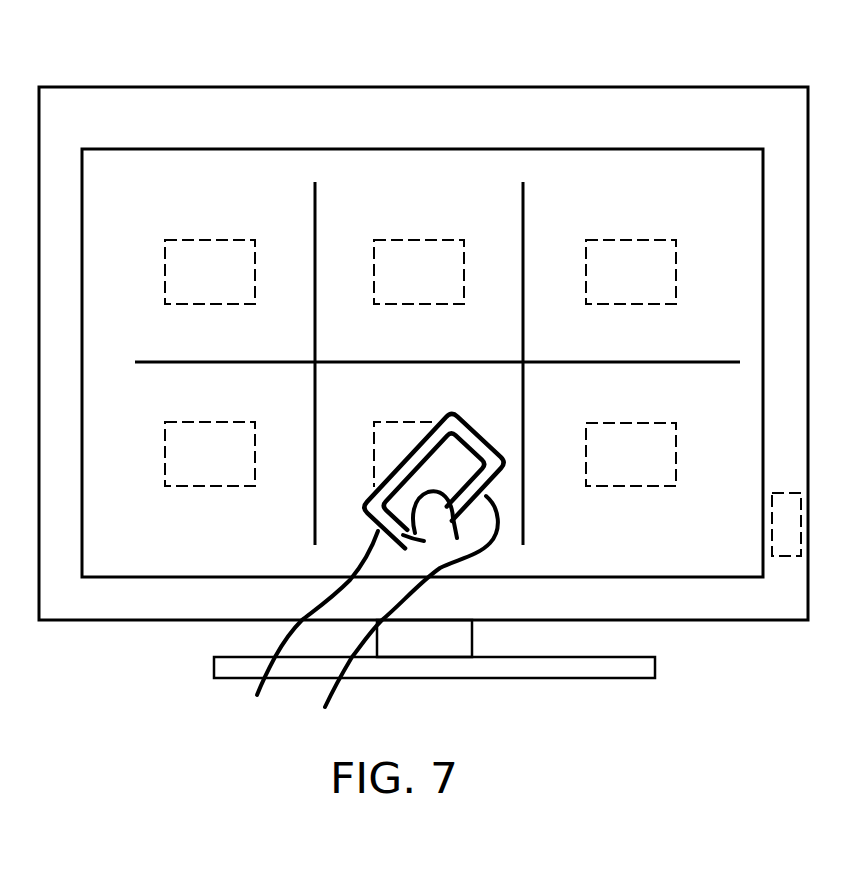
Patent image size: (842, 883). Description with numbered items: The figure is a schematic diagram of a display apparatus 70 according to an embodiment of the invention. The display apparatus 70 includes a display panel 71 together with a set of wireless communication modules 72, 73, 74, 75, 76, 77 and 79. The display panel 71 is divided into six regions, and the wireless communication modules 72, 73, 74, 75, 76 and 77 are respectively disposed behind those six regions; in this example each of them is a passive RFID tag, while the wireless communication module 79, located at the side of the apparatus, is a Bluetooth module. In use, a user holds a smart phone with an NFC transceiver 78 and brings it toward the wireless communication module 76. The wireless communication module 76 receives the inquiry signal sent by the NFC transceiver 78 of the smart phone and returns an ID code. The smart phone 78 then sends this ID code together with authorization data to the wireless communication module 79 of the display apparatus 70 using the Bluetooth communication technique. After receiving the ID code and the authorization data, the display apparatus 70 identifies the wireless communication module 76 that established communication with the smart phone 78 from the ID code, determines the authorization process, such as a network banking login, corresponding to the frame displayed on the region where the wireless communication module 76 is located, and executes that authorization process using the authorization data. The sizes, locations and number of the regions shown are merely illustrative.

The display apparatus 70 is at (770, 87).
The display panel 71 is at (703, 149).
The wireless communication module 72 is at (208, 240).
The wireless communication module 73 is at (415, 240).
The wireless communication module 74 is at (628, 240).
The wireless communication module 75 is at (208, 486).
The wireless communication module 76 is at (375, 422).
The wireless communication module 77 is at (628, 486).
The smart phone with NFC transceiver 78 is at (462, 414).
The wireless communication module 79 is at (790, 556).